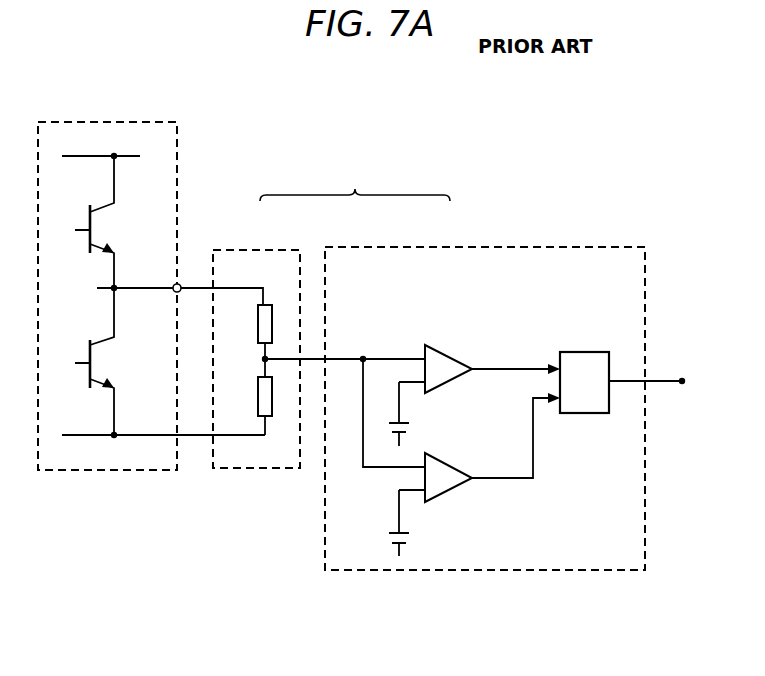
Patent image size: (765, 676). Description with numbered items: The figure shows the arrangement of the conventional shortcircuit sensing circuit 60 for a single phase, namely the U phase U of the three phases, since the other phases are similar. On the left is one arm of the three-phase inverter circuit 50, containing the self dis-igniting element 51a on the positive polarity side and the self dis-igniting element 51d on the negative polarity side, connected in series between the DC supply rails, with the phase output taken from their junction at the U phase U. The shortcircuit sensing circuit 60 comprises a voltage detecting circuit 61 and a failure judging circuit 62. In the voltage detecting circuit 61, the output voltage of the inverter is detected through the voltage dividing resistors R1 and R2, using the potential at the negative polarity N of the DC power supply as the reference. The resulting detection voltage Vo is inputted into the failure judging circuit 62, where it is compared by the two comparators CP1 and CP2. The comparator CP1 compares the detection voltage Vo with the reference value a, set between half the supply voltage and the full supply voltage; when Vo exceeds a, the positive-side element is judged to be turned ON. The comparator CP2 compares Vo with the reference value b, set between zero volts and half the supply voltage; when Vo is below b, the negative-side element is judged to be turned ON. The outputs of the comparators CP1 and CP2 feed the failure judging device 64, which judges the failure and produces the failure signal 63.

The three-phase inverter circuit 50 is at (157, 121).
The self dis-igniting element 51a is at (106, 222).
The self dis-igniting element 51d is at (106, 361).
The shortcircuit sensing circuit 60 is at (368, 184).
The voltage detecting circuit 61 is at (273, 250).
The failure judging circuit 62 is at (433, 247).
The failure signal 63 is at (665, 381).
The failure judging device 64 is at (586, 352).
The voltage dividing resistor R1 is at (249, 332).
The voltage dividing resistor R2 is at (249, 397).
The comparator CP1 is at (461, 357).
The comparator CP2 is at (461, 467).
The reference value a is at (408, 414).
The reference value b is at (408, 523).
The U phase U is at (166, 274).
The negative polarity N is at (197, 438).
The detection voltage Vo is at (345, 399).